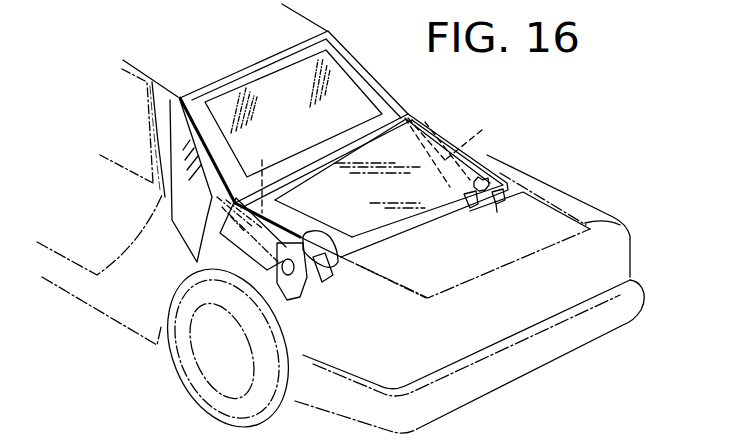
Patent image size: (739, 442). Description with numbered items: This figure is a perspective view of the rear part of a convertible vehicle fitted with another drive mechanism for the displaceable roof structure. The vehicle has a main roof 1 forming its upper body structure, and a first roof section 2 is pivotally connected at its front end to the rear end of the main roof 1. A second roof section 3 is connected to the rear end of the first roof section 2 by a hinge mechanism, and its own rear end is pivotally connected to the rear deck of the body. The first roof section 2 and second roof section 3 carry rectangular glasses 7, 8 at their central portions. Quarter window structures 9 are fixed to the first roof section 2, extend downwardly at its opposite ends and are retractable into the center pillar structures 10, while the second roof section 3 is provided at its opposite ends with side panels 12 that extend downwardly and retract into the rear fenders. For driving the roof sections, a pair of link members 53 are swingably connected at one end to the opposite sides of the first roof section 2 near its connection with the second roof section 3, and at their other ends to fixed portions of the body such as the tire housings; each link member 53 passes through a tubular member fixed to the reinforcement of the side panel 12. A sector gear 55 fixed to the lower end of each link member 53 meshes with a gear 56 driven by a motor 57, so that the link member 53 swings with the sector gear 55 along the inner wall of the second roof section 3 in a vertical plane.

The main roof 1 is at (277, 5).
The first roof section 2 is at (367, 81).
The second roof section 3 is at (430, 135).
The rectangular glass 7 is at (258, 90).
The rectangular glass 8 is at (317, 190).
The quarter window structure 9 is at (182, 213).
The center pillar structure 10 is at (153, 115).
The side panel 12 is at (220, 250).
The link member 53 is at (377, 162).
The sector gear 55 is at (293, 299).
The gear 56 is at (320, 236).
The motor 57 is at (335, 281).